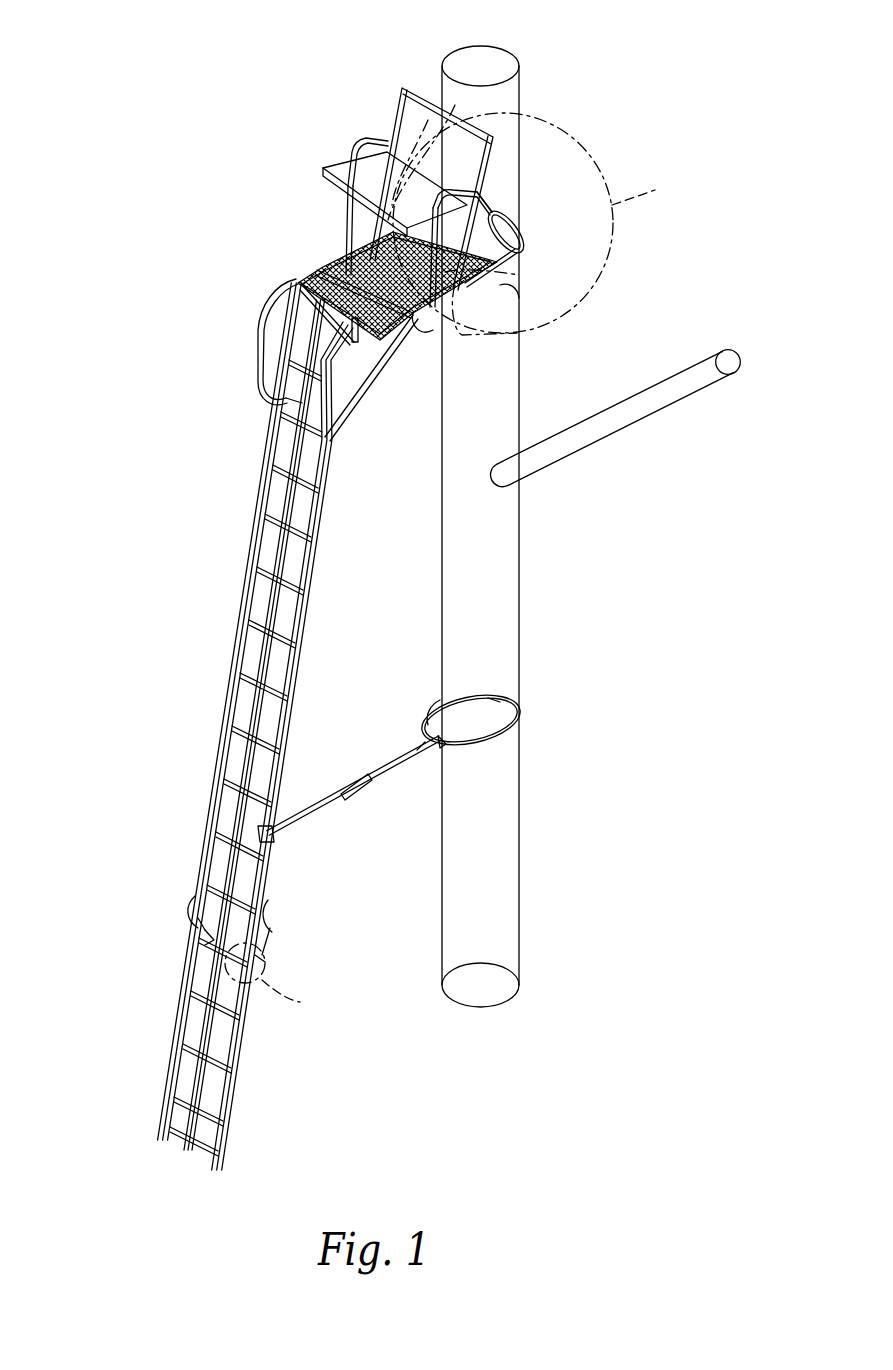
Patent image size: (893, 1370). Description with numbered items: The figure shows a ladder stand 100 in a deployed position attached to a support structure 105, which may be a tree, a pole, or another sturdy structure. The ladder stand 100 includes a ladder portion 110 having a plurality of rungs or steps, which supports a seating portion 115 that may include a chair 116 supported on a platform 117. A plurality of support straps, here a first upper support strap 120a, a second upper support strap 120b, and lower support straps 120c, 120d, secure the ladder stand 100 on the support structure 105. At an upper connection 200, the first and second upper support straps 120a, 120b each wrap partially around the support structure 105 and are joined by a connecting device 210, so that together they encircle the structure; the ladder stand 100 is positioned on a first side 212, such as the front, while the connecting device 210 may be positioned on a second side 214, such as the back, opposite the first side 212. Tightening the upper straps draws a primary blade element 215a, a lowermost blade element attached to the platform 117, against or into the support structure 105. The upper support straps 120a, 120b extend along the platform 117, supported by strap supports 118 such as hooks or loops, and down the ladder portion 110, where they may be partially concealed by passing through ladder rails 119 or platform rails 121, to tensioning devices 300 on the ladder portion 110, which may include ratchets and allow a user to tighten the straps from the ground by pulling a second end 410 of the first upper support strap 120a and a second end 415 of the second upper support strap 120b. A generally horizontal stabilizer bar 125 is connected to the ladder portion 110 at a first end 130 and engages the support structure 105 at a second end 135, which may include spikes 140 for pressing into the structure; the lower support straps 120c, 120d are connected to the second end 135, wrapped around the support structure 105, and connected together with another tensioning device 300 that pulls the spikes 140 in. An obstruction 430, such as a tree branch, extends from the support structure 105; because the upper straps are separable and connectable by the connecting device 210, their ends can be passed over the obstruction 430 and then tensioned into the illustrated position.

The ladder stand 100 is at (97, 370).
The support structure 105 is at (492, 578).
The ladder portion 110 is at (215, 690).
The seating portion 115 is at (368, 90).
The chair 116 is at (352, 165).
The platform 117 is at (338, 254).
The strap supports 118 is at (470, 290).
The ladder rails 119 is at (302, 347).
The first upper support strap 120a is at (437, 135).
The second upper support strap 120b is at (522, 243).
The lower support strap 120c is at (436, 700).
The lower support strap 120d is at (505, 746).
The platform rails 121 is at (360, 238).
The stabilizer bar 125 is at (325, 805).
The first end 130 is at (264, 842).
The second end 135 is at (420, 748).
The spikes 140 is at (455, 752).
The upper connection 200 is at (556, 193).
The connecting device 210 is at (497, 215).
The first side 212 is at (418, 493).
The second side 214 is at (537, 508).
The primary blade element 215a is at (508, 262).
The tensioning device 300 is at (492, 697).
The second end 410 is at (198, 922).
The second end 415 is at (272, 930).
The obstruction 430 is at (705, 405).